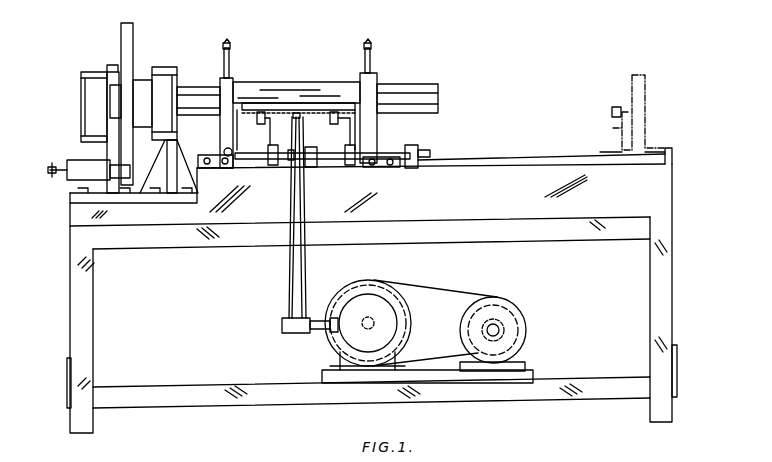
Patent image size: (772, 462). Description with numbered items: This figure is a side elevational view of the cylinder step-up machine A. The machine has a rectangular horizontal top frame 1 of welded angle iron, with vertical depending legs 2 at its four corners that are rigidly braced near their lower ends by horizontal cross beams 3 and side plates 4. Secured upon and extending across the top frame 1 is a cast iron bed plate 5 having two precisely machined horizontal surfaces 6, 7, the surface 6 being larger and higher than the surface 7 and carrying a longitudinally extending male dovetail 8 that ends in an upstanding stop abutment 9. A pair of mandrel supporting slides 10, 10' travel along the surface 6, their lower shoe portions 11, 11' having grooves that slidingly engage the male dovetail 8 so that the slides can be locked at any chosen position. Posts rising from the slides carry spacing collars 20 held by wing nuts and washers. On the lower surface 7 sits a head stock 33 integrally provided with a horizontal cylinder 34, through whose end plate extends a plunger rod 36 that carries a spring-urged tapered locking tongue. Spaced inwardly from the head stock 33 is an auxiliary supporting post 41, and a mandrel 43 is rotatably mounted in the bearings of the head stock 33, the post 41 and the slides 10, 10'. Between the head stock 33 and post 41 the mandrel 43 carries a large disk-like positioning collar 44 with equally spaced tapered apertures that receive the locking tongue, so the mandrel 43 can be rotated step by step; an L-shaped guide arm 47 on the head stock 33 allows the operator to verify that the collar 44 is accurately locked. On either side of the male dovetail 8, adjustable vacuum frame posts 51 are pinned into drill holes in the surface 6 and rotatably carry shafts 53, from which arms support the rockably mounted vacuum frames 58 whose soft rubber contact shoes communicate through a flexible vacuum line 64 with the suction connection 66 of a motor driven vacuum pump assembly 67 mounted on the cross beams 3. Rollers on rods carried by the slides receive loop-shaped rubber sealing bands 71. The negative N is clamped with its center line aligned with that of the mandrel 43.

The top frame 1 is at (198, 244).
The legs 2 is at (78, 338).
The cross beams 3 is at (188, 386).
The side plates 4 is at (67, 388).
The bed plate 5 is at (522, 190).
The surface 6 is at (449, 168).
The surface 7 is at (88, 203).
The male dovetail 8 is at (498, 157).
The stop abutment 9 is at (666, 148).
The mandrel supporting slide 10 is at (215, 113).
The mandrel supporting slide 10' is at (529, 108).
The shoe portion 11 is at (215, 174).
The shoe portion 11' is at (382, 174).
The spacing collars 20 is at (232, 62).
The head stock 33 is at (92, 124).
The cylinder 34 is at (83, 170).
The plunger rod 36 is at (48, 175).
The auxiliary supporting post 41 is at (168, 68).
The mandrel 43 is at (182, 113).
The positioning collar 44 is at (133, 42).
The guide arm 47 is at (112, 66).
The vacuum frame posts 51 is at (312, 146).
The shafts 53 is at (338, 165).
The vacuum frames 58 is at (320, 108).
The flexible vacuum line 64 is at (302, 215).
The suction connection 66 is at (292, 336).
The vacuum pump assembly 67 is at (386, 310).
The sealing bands 71 is at (252, 130).
The negative N is at (278, 86).
The cylinder step-up machine A is at (380, 276).